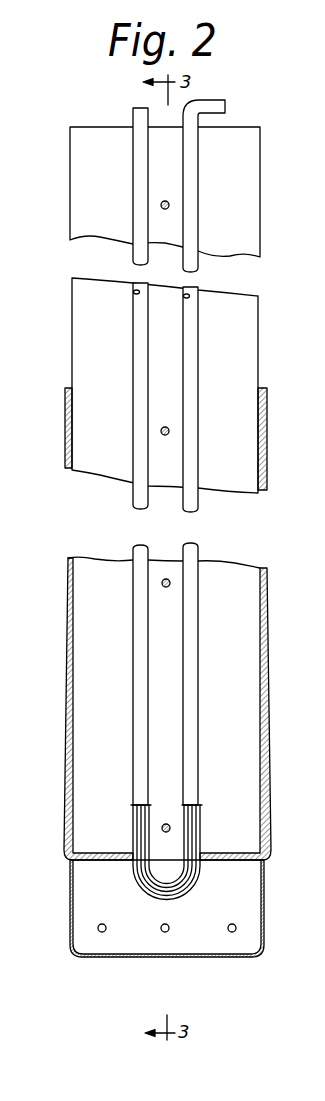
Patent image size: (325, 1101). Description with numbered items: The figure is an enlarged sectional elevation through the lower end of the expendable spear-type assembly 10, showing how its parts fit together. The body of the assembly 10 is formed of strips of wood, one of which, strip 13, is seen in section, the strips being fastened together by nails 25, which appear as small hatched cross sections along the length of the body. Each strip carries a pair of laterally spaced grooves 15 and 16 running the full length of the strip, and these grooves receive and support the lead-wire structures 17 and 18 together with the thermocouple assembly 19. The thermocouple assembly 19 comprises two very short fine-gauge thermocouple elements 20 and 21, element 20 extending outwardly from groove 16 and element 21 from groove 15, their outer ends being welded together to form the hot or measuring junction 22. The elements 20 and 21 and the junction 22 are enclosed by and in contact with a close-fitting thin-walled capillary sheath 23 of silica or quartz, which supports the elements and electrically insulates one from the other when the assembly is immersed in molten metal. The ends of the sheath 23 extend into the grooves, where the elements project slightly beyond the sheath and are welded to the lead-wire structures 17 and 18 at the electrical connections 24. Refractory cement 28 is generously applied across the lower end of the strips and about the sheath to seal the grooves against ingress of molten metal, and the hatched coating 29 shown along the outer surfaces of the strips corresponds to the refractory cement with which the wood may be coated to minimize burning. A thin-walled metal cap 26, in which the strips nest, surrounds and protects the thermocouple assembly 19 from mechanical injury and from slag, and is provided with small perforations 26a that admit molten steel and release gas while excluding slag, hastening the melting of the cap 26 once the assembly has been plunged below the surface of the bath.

The assembly 10 is at (57, 432).
The strip of wood 13 is at (247, 202).
The groove 15 is at (190, 297).
The groove 16 is at (134, 292).
The lead-wire structure 17 is at (198, 418).
The lead-wire structure 18 is at (134, 407).
The thermocouple assembly 19 is at (170, 842).
The thermocouple element 20 is at (140, 878).
The thermocouple element 21 is at (196, 872).
The measuring junction 22 is at (166, 897).
The capillary sheath 23 is at (188, 888).
The electrical connections 24 is at (190, 803).
The nails 25 is at (166, 200).
The metal cap 26 is at (264, 928).
The perforations 26a is at (230, 931).
The refractory cement 28 is at (112, 861).
The housing wall 29 is at (68, 710).